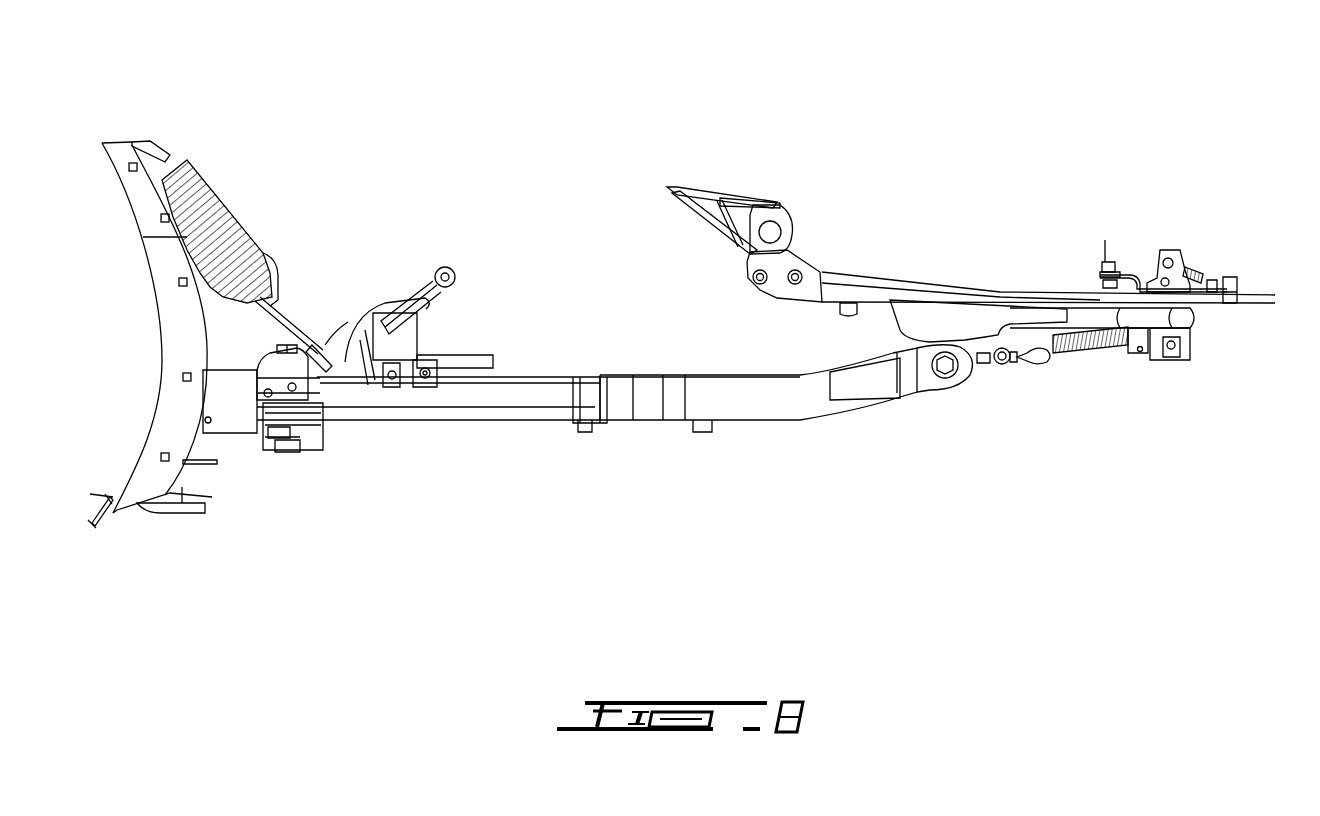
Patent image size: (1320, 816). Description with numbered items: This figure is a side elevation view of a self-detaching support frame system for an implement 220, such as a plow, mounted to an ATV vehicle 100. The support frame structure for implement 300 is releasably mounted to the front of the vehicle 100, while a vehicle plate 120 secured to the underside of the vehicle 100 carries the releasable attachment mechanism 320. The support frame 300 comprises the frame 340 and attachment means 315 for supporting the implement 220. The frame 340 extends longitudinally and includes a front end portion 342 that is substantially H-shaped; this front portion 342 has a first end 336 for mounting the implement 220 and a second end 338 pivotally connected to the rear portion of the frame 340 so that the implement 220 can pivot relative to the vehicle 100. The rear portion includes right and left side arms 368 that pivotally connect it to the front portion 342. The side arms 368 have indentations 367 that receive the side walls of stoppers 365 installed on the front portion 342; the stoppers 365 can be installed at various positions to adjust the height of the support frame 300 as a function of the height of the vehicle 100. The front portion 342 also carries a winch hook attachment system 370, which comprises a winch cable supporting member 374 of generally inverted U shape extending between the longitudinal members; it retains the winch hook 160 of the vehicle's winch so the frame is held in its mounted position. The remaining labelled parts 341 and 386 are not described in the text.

The support frame structure for implement 300 is at (284, 70).
The vehicle 100 is at (640, 170).
The vehicle plate 120 is at (1137, 285).
The winch hook 160 is at (455, 312).
The implement 220 is at (153, 482).
The attachment means 315 is at (295, 425).
The releasable attachment mechanism 320 is at (1135, 255).
The first end 336 is at (318, 428).
The second end 338 is at (957, 335).
The frame 340 is at (870, 432).
The frame bar 341 is at (862, 297).
The front end portion 342 is at (655, 410).
The stoppers 365 is at (1027, 363).
The indentations 367 is at (985, 330).
The right and left side arms 368 is at (990, 367).
The winch hook attachment system 370 is at (362, 272).
The winch cable supporting member 374 is at (345, 332).
The spring 386 is at (1083, 353).